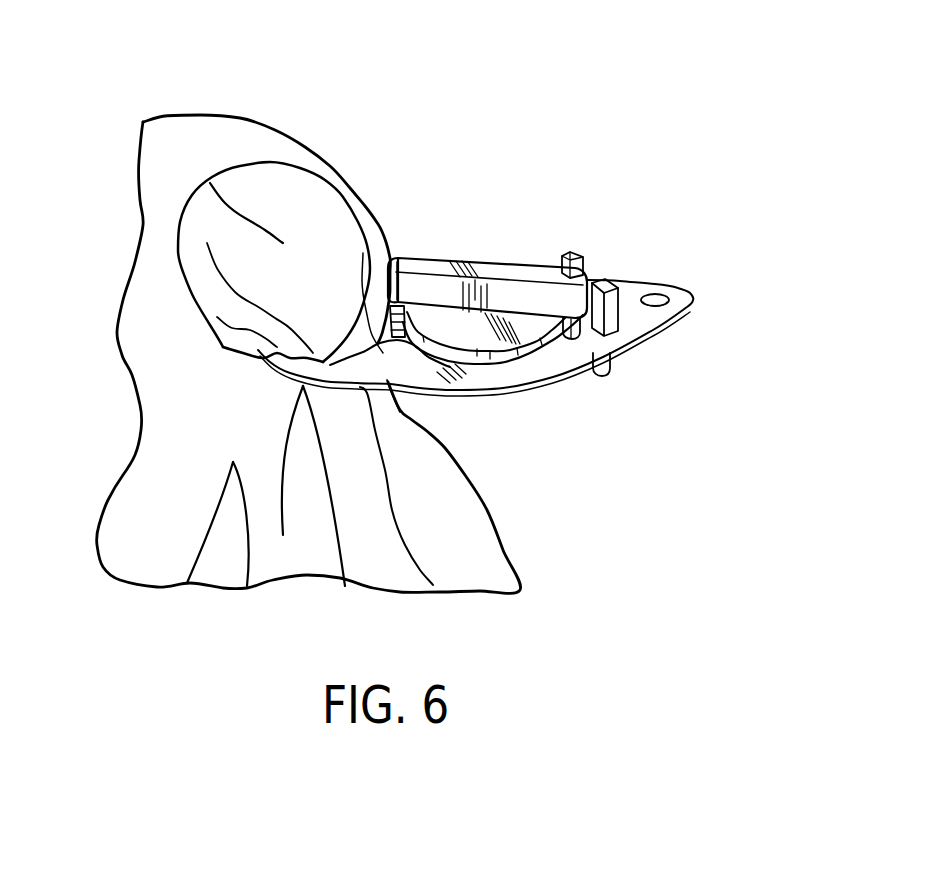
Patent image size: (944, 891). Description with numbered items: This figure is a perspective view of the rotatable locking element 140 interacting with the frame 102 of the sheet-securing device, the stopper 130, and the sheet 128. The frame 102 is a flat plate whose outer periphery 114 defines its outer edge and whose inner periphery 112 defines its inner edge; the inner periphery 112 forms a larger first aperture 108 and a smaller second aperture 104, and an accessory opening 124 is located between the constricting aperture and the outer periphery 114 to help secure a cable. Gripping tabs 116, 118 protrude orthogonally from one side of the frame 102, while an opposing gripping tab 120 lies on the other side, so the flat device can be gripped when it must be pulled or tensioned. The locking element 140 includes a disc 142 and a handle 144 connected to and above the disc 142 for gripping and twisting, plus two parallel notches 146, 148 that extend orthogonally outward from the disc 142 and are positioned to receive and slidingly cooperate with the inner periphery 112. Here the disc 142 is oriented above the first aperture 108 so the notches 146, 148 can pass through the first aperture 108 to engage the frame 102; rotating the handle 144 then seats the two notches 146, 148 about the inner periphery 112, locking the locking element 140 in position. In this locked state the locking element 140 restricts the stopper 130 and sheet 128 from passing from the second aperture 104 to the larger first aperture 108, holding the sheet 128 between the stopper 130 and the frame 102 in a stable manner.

The frame 102 is at (345, 355).
The second aperture 104 is at (430, 425).
The first aperture 108 is at (502, 330).
The inner periphery 112 is at (570, 330).
The outer periphery 114 is at (545, 350).
The gripping tab 116 is at (576, 252).
The gripping tab 118 is at (612, 312).
The gripping tab 120 is at (610, 367).
The accessory opening 124 is at (657, 292).
The sheet 128 is at (445, 537).
The stopper 130 is at (210, 183).
The locking element 140 is at (531, 320).
The disc 142 is at (430, 280).
The handle 144 is at (492, 285).
The notch 146 is at (386, 255).
The notch 148 is at (610, 280).